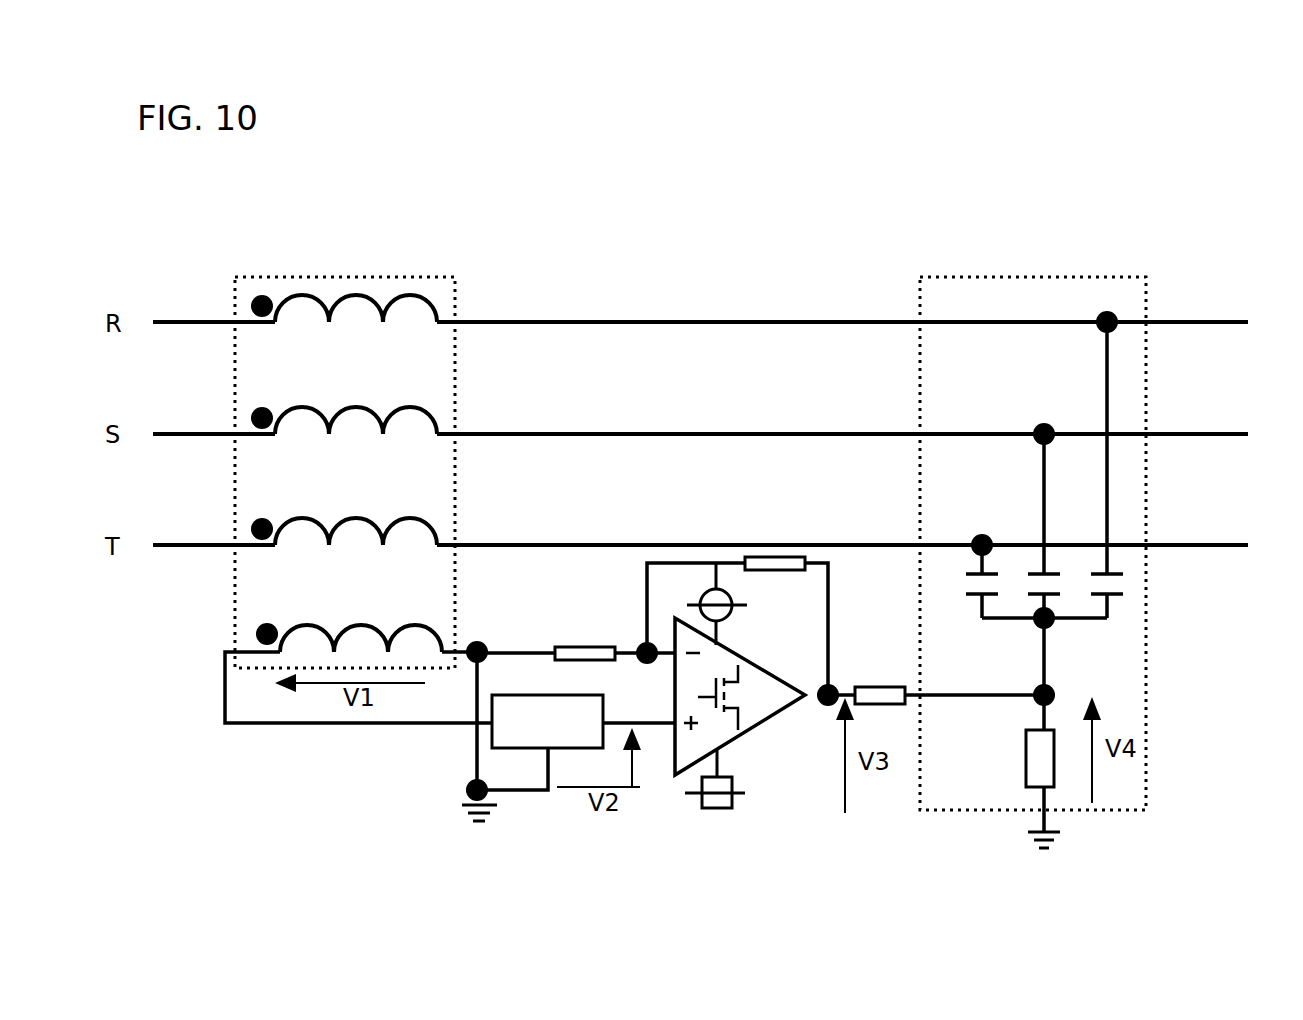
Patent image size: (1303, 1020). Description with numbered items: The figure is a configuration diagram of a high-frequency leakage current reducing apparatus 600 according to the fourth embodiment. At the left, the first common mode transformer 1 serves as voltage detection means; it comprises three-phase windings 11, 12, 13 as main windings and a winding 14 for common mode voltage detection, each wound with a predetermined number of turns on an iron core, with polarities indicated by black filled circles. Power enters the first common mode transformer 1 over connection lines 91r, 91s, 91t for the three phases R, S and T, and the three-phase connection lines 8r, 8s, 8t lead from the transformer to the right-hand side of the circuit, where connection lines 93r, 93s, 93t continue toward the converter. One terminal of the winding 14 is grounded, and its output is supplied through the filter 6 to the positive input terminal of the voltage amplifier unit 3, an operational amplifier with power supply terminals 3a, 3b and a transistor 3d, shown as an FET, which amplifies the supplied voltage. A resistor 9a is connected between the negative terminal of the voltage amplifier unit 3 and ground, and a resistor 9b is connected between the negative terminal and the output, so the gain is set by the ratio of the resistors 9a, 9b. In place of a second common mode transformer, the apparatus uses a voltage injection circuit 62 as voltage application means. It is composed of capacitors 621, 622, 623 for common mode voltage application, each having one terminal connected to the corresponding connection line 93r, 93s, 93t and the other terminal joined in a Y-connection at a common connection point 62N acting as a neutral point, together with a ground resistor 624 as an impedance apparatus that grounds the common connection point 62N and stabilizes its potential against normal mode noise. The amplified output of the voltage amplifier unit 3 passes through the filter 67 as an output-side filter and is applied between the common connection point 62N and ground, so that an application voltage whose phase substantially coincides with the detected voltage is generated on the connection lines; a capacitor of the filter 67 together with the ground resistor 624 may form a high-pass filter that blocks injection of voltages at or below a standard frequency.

The first common mode transformer 1 is at (298, 277).
The three-phase winding 11 is at (282, 324).
The three-phase winding 12 is at (282, 436).
The three-phase winding 13 is at (282, 547).
The winding for common mode voltage detection 14 is at (405, 630).
The voltage amplifier unit 3 is at (740, 692).
The power supply terminal 3a is at (717, 566).
The power supply terminal 3b is at (717, 810).
The transistor 3d is at (742, 700).
The filter 6 is at (530, 695).
The resistor 9a is at (605, 645).
The resistor 9b is at (778, 555).
The filter 67 is at (886, 686).
The three-phase connection line 8r is at (518, 320).
The three-phase connection line 8s is at (518, 432).
The three-phase connection line 8t is at (518, 543).
The connection line 91r is at (188, 320).
The connection line 91s is at (188, 432).
The connection line 91t is at (188, 543).
The connection line 93r is at (1225, 322).
The connection line 93s is at (1225, 434).
The connection line 93t is at (1230, 545).
The voltage injection circuit 62 is at (1055, 277).
The capacitor for common mode voltage application 621 is at (966, 572).
The capacitor for common mode voltage application 622 is at (1028, 572).
The capacitor for common mode voltage application 623 is at (1093, 572).
The ground resistor 624 is at (1026, 772).
The common connection point 62N is at (1055, 628).
The high-frequency leakage current reducing apparatus 600 is at (615, 258).